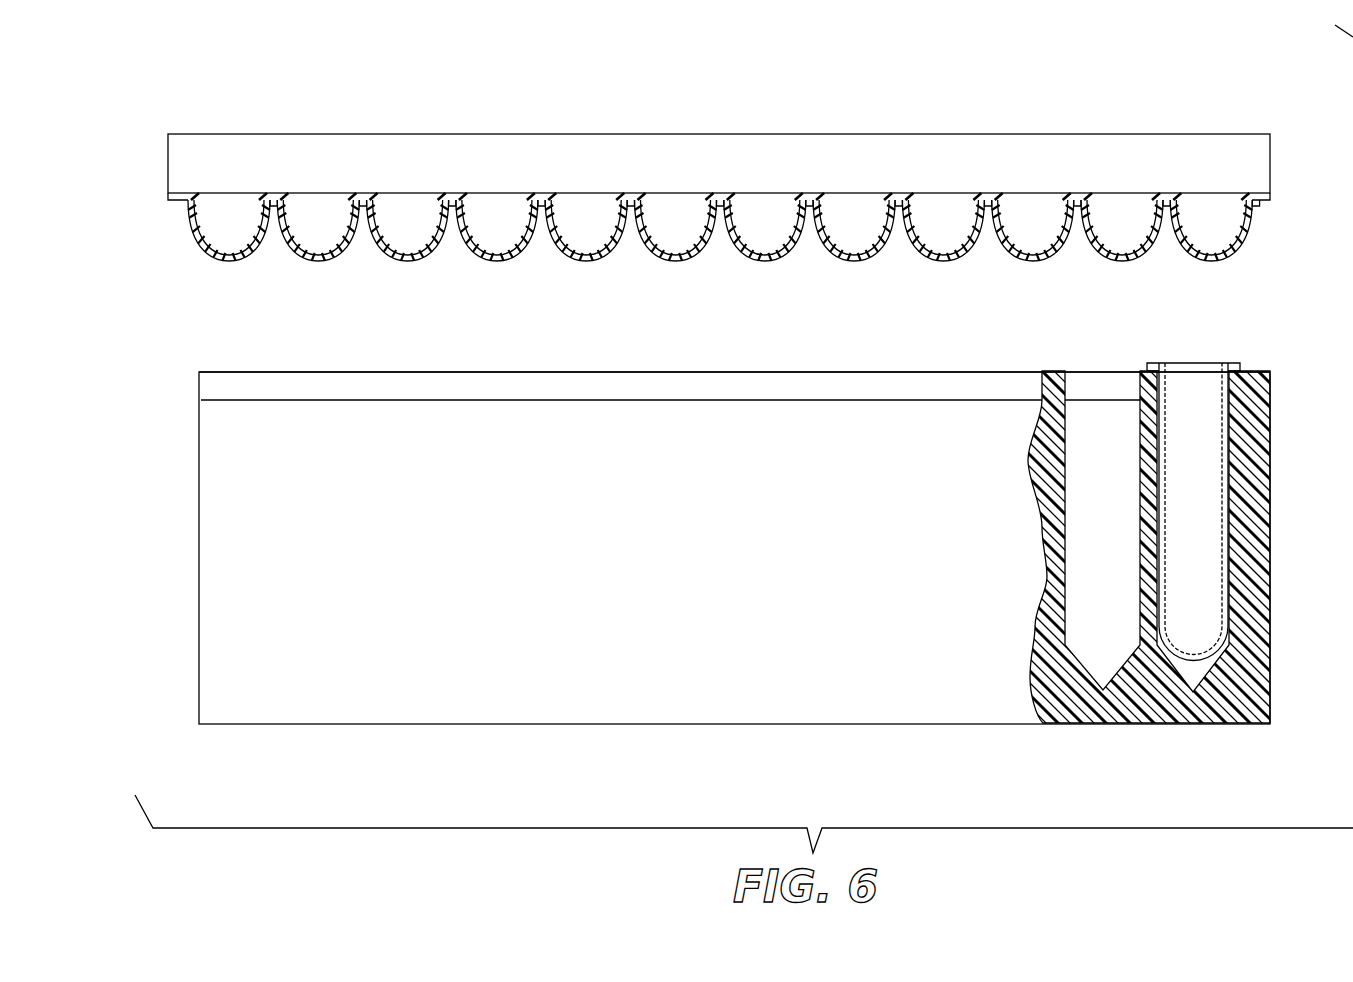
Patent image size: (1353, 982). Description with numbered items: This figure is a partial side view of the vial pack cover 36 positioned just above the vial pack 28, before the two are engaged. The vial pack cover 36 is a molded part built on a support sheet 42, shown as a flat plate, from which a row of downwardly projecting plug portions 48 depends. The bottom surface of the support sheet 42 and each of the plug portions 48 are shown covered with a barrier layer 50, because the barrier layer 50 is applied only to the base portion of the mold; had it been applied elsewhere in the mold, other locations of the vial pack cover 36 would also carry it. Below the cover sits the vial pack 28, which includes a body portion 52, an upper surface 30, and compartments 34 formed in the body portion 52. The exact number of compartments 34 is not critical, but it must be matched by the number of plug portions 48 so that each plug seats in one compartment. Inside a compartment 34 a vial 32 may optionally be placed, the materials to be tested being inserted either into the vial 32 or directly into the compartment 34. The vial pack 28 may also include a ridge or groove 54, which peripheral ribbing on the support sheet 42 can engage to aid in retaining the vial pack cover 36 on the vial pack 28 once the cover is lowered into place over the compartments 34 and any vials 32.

The vial pack 28 is at (776, 556).
The upper surface 30 is at (820, 372).
The vial 32 is at (1225, 572).
The compartment 34 is at (1108, 665).
The vial pack cover 36 is at (719, 173).
The support sheet 42 is at (351, 150).
The plug portion 48 is at (1207, 225).
The barrier layer 50 is at (500, 263).
The body portion 52 is at (497, 695).
The ridge or groove 54 is at (352, 385).